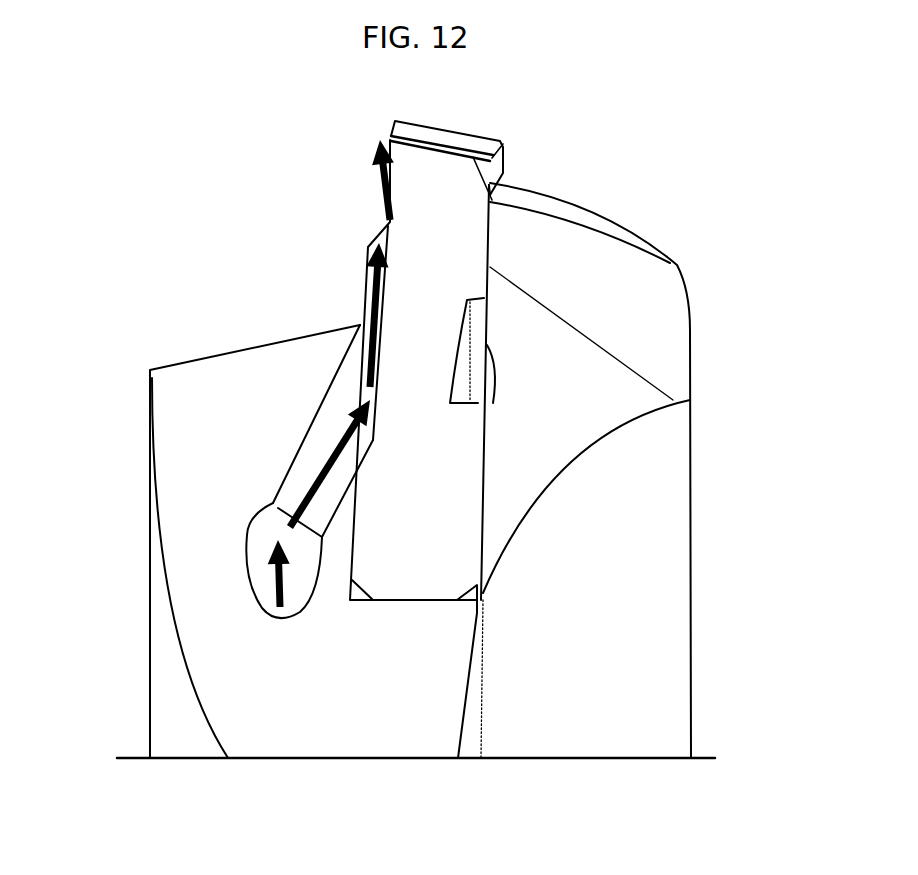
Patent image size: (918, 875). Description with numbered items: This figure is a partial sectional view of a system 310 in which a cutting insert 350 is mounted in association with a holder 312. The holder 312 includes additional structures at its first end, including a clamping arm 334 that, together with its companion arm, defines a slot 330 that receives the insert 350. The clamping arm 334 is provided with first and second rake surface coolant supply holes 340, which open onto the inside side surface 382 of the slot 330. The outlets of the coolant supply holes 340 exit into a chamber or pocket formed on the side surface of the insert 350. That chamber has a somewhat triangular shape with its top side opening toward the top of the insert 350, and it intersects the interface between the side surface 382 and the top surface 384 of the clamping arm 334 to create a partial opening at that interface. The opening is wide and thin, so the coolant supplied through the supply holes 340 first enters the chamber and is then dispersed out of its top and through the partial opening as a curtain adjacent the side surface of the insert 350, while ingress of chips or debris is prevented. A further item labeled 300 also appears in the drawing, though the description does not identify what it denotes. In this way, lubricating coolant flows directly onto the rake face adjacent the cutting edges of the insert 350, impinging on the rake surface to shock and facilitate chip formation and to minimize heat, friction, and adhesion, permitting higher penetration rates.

The latch assembly 300 is at (506, 452).
The system 310 is at (410, 459).
The holder 312 is at (697, 376).
The slot 330 is at (418, 602).
The clamping arm 334 is at (626, 220).
The rake surface coolant supply hole 340 is at (332, 385).
The cutting insert 350 is at (479, 137).
The side surface 382 is at (373, 440).
The top surface 384 is at (198, 357).